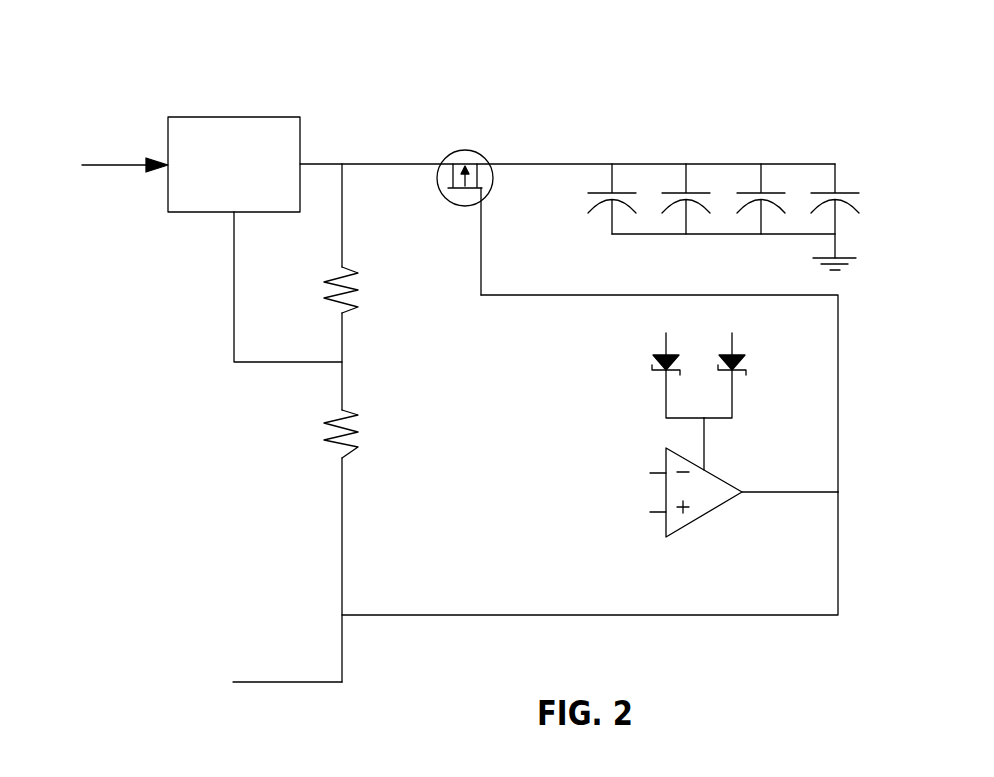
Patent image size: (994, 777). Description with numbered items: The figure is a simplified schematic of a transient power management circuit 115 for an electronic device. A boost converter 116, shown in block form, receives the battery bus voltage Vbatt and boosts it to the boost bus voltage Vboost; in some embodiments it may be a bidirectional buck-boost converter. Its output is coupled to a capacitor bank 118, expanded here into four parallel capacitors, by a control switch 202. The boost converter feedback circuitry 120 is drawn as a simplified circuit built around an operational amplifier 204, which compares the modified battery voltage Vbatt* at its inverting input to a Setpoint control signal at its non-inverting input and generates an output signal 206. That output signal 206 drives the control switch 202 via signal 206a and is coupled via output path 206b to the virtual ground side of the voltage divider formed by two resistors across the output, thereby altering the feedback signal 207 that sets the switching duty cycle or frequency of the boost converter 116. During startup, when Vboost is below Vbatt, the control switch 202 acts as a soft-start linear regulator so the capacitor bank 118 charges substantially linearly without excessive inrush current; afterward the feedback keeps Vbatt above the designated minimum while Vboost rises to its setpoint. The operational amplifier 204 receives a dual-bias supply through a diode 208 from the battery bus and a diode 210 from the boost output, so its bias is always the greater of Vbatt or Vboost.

The transient power management circuit 115 is at (198, 78).
The boost converter 116 is at (243, 117).
The capacitor bank 118 is at (732, 137).
The boost converter feedback circuitry 120 is at (281, 542).
The control switch 202 is at (474, 151).
The operational amplifier 204 is at (708, 513).
The output signal 206 is at (823, 487).
The control switch signal 206a is at (596, 295).
The output path 206b is at (748, 617).
The feedback signal 207 is at (268, 364).
The diode 208 is at (656, 364).
The diode 210 is at (736, 387).